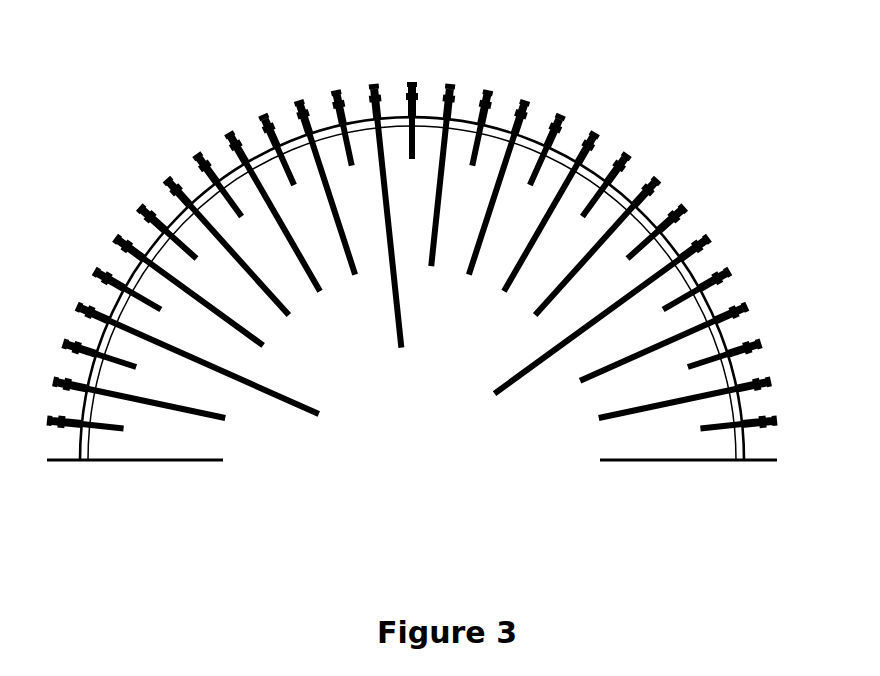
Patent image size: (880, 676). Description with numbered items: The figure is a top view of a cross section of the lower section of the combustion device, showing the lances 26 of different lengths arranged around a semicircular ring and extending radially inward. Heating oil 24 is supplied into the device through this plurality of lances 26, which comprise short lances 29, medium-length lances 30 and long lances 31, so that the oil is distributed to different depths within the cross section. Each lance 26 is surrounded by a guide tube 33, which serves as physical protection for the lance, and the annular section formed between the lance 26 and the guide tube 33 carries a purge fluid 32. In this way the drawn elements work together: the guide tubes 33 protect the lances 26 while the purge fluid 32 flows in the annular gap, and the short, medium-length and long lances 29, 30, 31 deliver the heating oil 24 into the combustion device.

The heating oil 24 is at (108, 233).
The lances 26 is at (323, 100).
The short lances 29 is at (492, 93).
The medium-length lances 30 is at (511, 157).
The long lances 31 is at (714, 260).
The purge fluid 32 is at (451, 293).
The guide tube 33 is at (465, 288).